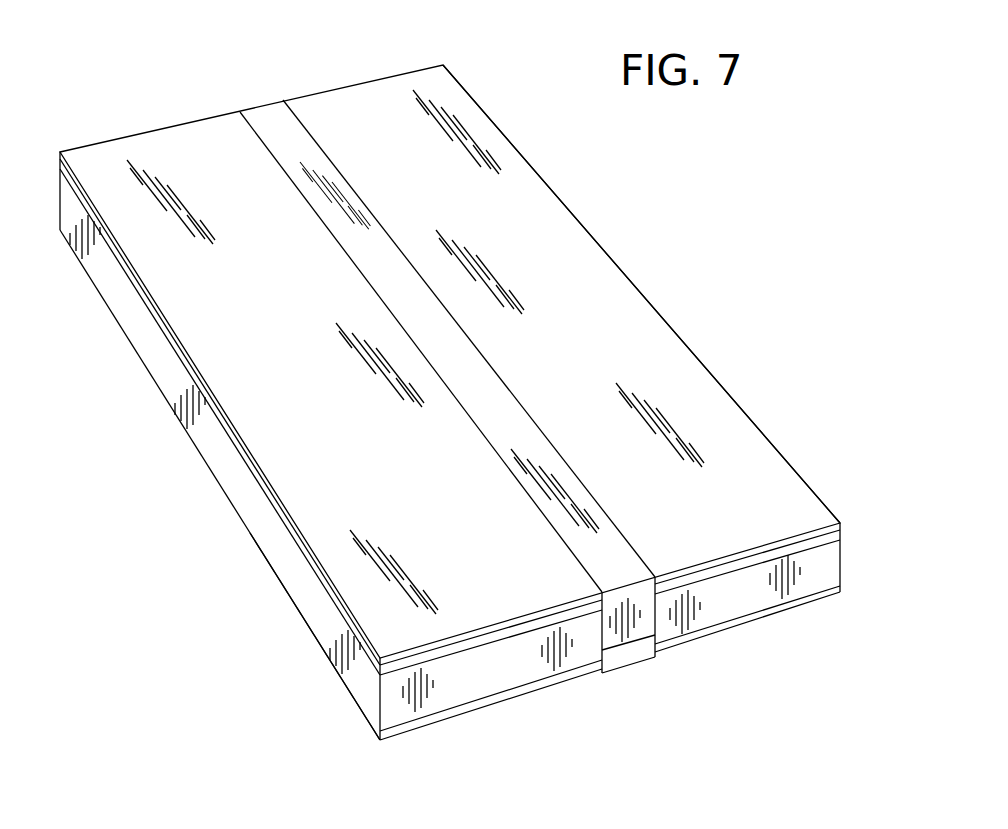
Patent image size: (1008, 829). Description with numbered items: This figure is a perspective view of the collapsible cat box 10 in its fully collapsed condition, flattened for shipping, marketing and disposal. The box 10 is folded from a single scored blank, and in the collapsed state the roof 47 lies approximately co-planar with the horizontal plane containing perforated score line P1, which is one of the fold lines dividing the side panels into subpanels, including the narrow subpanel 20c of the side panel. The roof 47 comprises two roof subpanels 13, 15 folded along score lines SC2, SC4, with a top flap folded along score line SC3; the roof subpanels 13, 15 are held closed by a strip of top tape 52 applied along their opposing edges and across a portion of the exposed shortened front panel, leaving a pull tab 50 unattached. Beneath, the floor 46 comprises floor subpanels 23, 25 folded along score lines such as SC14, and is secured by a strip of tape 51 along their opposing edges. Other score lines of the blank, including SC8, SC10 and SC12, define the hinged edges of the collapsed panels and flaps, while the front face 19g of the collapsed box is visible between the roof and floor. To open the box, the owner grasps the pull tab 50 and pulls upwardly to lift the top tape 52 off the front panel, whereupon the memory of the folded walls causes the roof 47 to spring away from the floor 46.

The box 10 is at (132, 115).
The roof 47 is at (375, 110).
The roof subpanel 13 is at (355, 414).
The roof subpanel 15 is at (582, 359).
The top tape 52 is at (598, 533).
The pull tab 50 is at (642, 607).
The tape 51 is at (628, 657).
The score line SC12 is at (60, 200).
The score line SC2 is at (175, 330).
The perforated score line P1 is at (285, 517).
The subpanel 20c is at (218, 449).
The score line SC14 is at (308, 622).
The score line SC10 is at (375, 710).
The score line SC3 is at (492, 630).
The front face 19g is at (502, 686).
The floor subpanel 23 is at (505, 699).
The floor 46 is at (561, 697).
The floor subpanel 25 is at (760, 620).
The score line SC8 is at (842, 560).
The score line SC4 is at (683, 338).